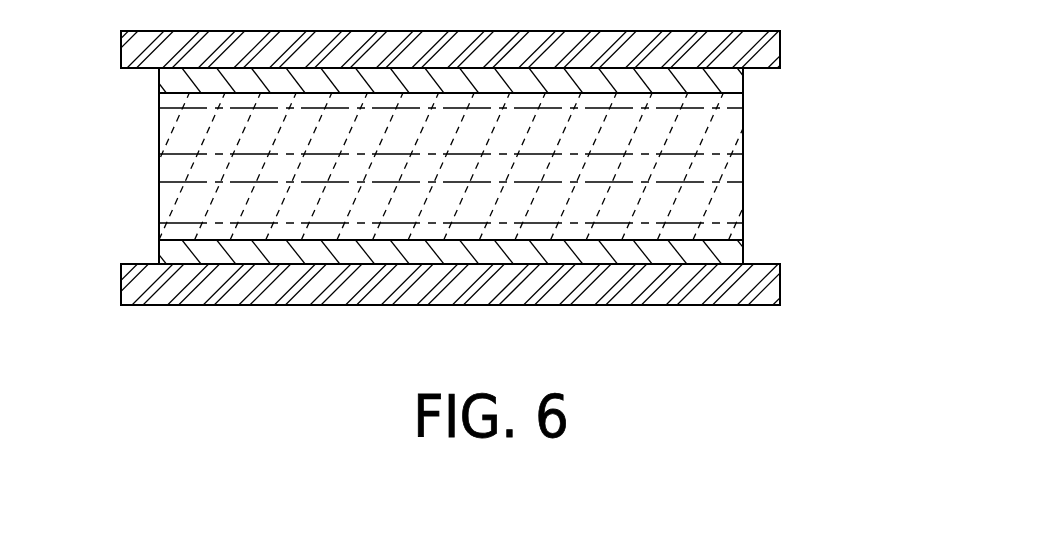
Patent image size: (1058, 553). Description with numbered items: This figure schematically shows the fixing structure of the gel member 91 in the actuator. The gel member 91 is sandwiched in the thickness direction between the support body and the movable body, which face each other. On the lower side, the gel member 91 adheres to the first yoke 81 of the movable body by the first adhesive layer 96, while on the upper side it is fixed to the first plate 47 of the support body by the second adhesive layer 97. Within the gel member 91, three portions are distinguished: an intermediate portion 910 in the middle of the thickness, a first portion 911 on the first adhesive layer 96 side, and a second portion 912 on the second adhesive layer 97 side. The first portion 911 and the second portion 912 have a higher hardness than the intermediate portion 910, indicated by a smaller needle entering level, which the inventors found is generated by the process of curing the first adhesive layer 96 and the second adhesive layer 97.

The first plate 47 is at (767, 46).
The second adhesive layer 97 is at (718, 82).
The gel member 91 is at (420, 172).
The second portion 912 is at (175, 100).
The intermediate portion 910 is at (175, 170).
The first portion 911 is at (173, 232).
The first adhesive layer 96 is at (718, 252).
The first yoke 81 is at (765, 288).